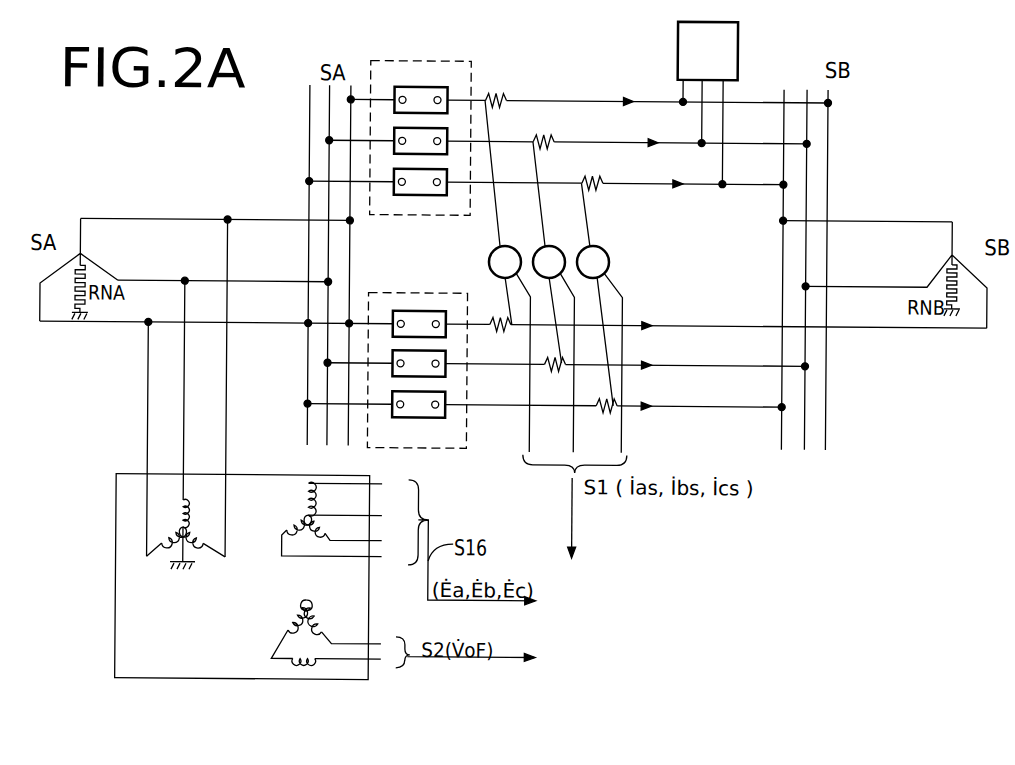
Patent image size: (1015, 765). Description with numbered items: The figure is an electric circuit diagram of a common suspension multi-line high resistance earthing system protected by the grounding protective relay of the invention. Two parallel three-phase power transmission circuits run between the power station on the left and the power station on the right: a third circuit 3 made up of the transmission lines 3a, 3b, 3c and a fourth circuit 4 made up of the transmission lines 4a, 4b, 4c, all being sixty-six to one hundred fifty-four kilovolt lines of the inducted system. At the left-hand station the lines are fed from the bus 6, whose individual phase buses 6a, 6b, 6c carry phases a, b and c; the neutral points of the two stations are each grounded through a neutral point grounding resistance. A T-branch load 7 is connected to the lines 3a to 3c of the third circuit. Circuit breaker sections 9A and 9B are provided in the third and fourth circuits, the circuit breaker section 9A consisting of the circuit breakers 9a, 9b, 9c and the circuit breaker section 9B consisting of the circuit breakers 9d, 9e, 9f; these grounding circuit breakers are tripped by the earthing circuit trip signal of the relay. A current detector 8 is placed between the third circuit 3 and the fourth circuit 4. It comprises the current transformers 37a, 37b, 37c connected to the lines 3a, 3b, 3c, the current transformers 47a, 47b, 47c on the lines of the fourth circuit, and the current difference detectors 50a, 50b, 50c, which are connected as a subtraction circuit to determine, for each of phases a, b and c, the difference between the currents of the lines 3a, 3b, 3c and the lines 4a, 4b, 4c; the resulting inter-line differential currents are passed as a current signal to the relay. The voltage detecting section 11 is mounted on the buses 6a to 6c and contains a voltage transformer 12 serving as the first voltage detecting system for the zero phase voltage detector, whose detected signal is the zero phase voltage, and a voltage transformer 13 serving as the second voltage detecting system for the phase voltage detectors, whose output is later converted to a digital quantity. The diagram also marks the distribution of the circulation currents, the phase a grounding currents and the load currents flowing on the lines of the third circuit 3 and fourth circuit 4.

The third circuit 3 is at (745, 189).
The transmission line 3a is at (742, 101).
The transmission line 3b is at (742, 142).
The transmission line 3c is at (742, 183).
The fourth circuit 4 is at (740, 409).
The transmission line 4a is at (742, 325).
The transmission line 4b is at (742, 364).
The transmission line 4c is at (742, 405).
The bus 6 is at (240, 243).
The bus 6a is at (258, 222).
The bus 6b is at (258, 283).
The bus 6c is at (258, 325).
The T-branch load 7 is at (737, 56).
The current detector 8 is at (622, 296).
The circuit breaker section 9A is at (447, 47).
The circuit breaker section 9B is at (437, 294).
The circuit breaker 9a is at (400, 87).
The circuit breaker 9b is at (400, 129).
The circuit breaker 9c is at (400, 170).
The circuit breaker 9d is at (398, 312).
The circuit breaker 9e is at (398, 352).
The circuit breaker 9f is at (398, 393).
The voltage detecting section 11 is at (118, 616).
The voltage transformer 12 is at (287, 622).
The voltage transformer 13 is at (302, 514).
The current transformer 37a is at (505, 93).
The current transformer 37b is at (555, 142).
The current transformer 37c is at (603, 183).
The current transformer 47a is at (495, 332).
The current transformer 47b is at (551, 372).
The current transformer 47c is at (603, 414).
The current difference detector 50a is at (516, 239).
The current difference detector 50b is at (560, 239).
The current difference detector 50c is at (606, 239).